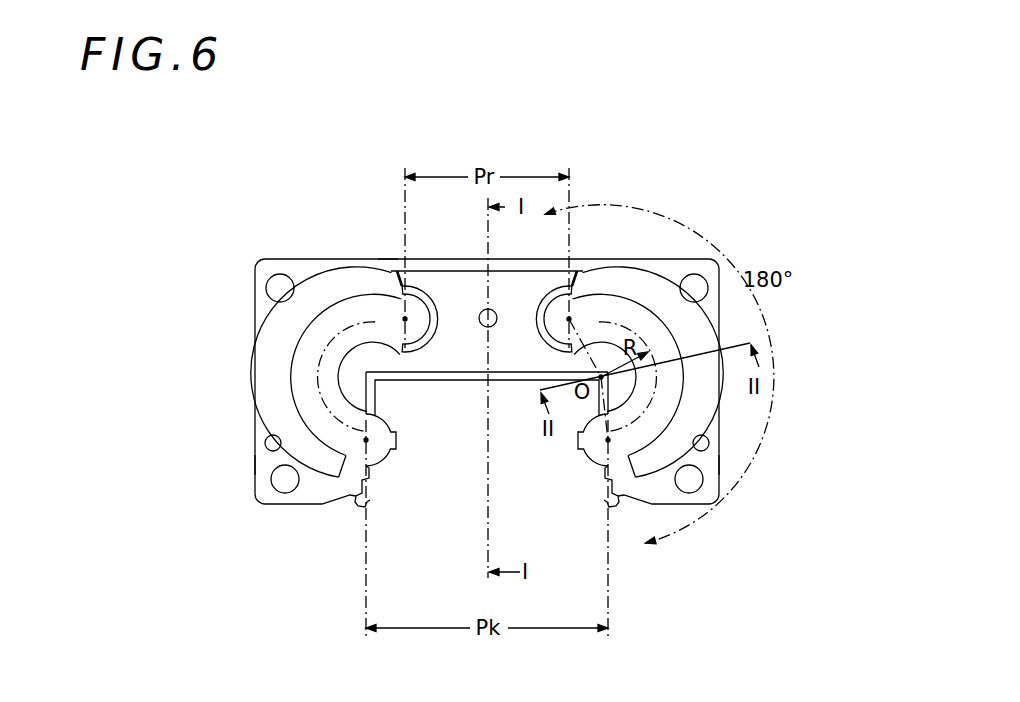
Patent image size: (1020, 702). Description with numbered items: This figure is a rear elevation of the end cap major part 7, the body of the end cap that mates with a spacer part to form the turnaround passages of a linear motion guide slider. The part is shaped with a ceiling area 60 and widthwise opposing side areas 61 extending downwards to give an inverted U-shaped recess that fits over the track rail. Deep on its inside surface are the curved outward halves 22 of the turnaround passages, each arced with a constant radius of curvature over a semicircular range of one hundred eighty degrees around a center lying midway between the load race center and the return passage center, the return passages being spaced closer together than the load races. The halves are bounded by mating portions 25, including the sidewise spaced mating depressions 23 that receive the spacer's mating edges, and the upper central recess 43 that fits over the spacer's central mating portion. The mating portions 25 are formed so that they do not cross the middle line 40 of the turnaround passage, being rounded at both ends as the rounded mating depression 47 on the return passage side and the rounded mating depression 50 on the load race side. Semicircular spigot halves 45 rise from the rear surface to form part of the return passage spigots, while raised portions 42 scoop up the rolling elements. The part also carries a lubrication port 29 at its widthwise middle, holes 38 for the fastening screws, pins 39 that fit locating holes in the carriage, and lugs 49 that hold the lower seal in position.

The end cap major part 7 is at (322, 257).
The curved outward half 22 is at (633, 315).
The mating depressions 23 is at (489, 372).
The mating portions 25 is at (680, 335).
The lubrication port 29 is at (483, 311).
The holes 38 is at (689, 479).
The pins 39 is at (701, 443).
The middle line 40 is at (652, 392).
The raised portions 42 is at (580, 442).
The upper central recess 43 is at (480, 271).
The semicircular spigot half 45 is at (538, 340).
The rounded mating depression 47 is at (579, 276).
The lugs 49 is at (615, 505).
The rounded mating depression 50 is at (641, 468).
The ceiling area 60 is at (387, 265).
The side areas 61 is at (718, 466).